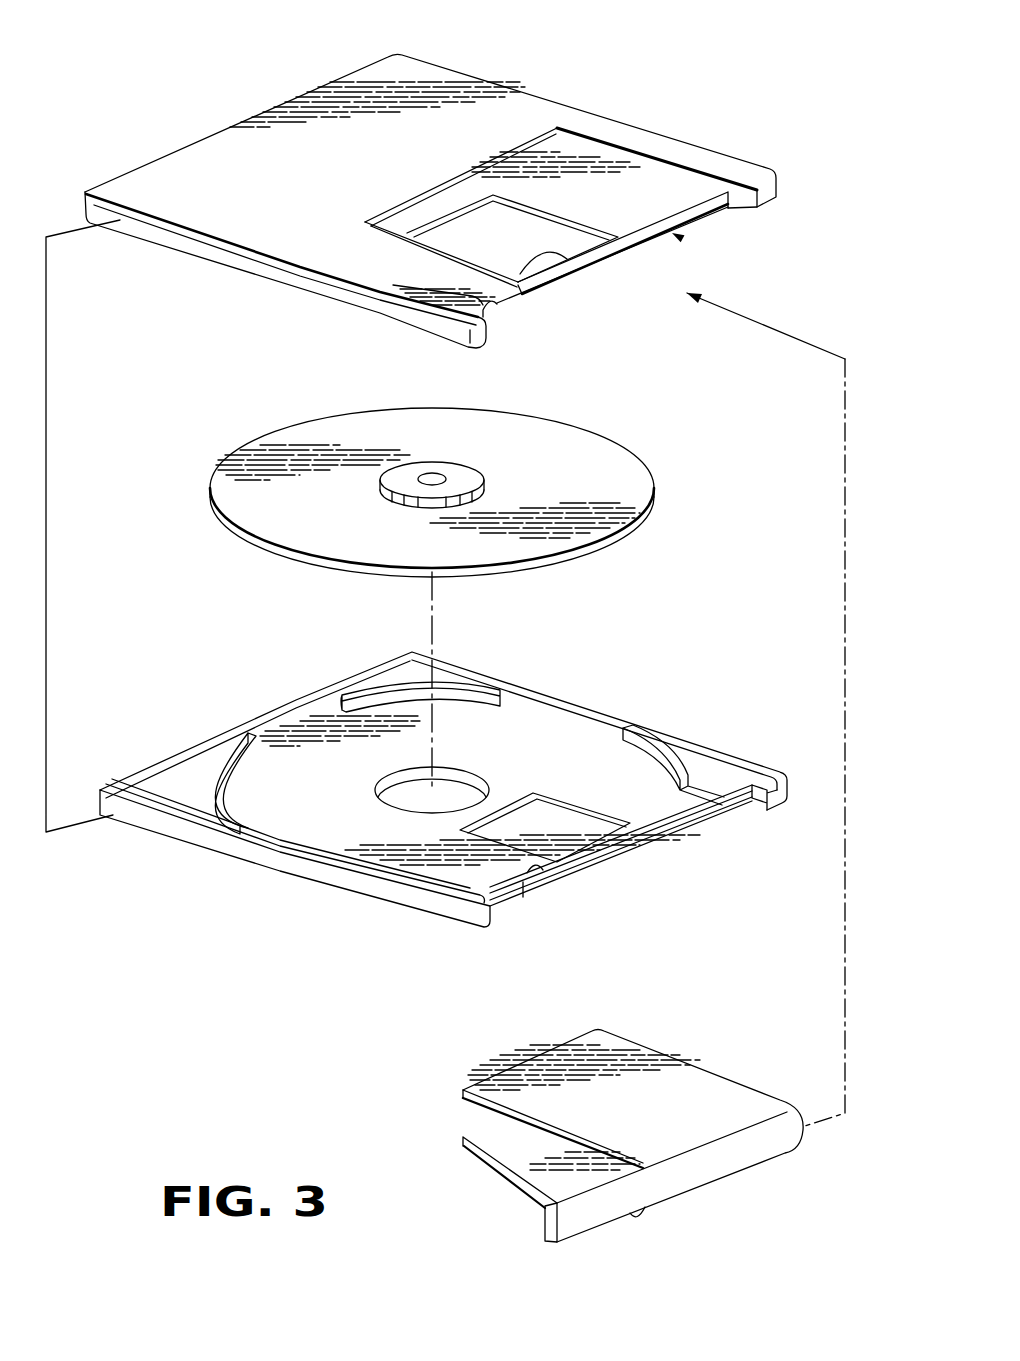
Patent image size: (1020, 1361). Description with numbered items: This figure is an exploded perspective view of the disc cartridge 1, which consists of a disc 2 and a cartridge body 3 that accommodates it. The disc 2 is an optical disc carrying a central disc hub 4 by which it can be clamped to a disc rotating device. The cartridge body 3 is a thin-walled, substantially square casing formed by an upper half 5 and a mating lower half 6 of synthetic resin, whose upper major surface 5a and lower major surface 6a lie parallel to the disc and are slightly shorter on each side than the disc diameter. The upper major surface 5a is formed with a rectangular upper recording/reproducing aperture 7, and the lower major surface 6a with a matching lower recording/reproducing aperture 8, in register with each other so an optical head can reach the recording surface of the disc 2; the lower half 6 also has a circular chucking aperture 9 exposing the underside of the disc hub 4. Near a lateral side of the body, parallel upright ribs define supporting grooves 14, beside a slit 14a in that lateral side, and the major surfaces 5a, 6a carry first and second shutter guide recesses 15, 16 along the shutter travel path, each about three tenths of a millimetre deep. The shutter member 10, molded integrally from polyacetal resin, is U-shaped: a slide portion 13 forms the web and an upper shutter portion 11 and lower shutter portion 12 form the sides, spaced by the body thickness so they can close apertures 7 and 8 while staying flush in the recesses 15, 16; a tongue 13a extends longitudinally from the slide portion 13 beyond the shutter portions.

The disc cartridge 1 is at (655, 115).
The disc 2 is at (592, 442).
The cartridge body 3 is at (48, 512).
The disc hub 4 is at (477, 471).
The upper half 5 is at (512, 90).
The upper major surface 5a is at (203, 163).
The lower half 6 is at (242, 850).
The lower major surface 6a is at (343, 905).
The upper recording/reproducing aperture 7 is at (552, 263).
The lower recording/reproducing aperture 8 is at (557, 860).
The chucking aperture 9 is at (478, 783).
The shutter member 10 is at (722, 1042).
The upper shutter portion 11 is at (657, 1065).
The lower shutter portion 12 is at (510, 1148).
The slide portion 13 is at (748, 1158).
The tongue 13a is at (613, 1219).
The supporting groove 14 is at (678, 236).
The slit 14a is at (537, 297).
The first shutter guide recess 15 is at (678, 173).
The second shutter guide recess 16 is at (747, 807).